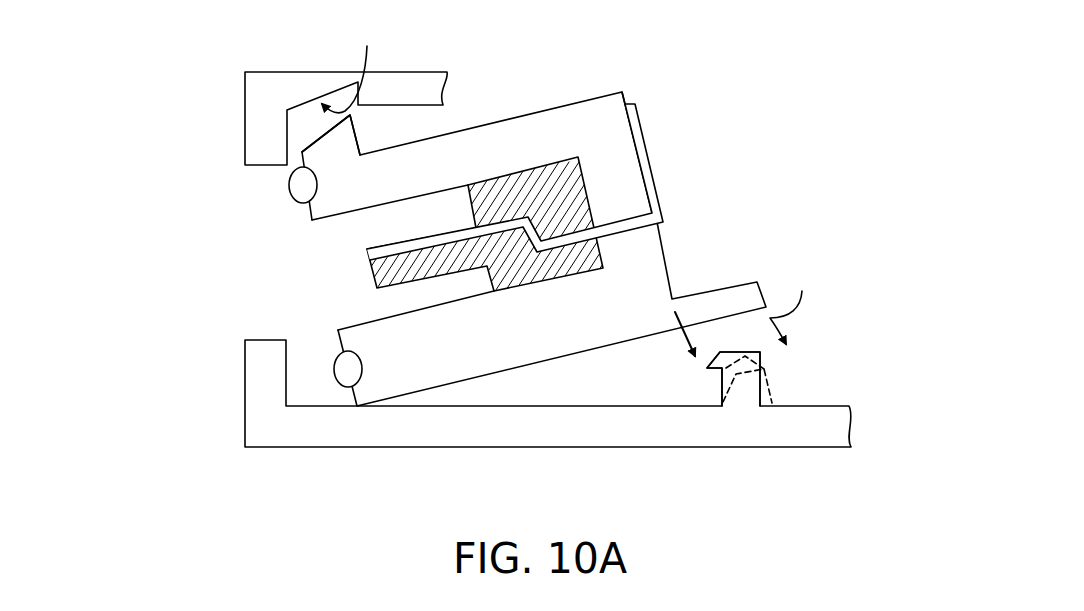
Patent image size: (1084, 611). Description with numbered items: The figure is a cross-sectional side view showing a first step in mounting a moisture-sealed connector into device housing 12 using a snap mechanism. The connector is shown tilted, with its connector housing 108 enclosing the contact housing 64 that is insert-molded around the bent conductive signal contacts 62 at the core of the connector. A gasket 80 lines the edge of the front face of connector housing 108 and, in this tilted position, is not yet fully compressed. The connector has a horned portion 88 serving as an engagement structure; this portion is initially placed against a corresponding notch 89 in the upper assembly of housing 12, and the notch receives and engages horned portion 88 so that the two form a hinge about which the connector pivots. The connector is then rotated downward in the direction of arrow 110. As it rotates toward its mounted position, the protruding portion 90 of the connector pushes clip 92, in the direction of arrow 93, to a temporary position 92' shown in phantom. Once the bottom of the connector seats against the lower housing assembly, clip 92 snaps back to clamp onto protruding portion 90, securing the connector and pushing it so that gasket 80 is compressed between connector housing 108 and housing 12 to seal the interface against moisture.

The device housing 12 is at (427, 84).
The conductive signal contacts 62 is at (640, 125).
The contact housing 64 is at (509, 290).
The gasket 80 is at (340, 362).
The horned portion 88 is at (316, 155).
The notch 89 is at (352, 66).
The protruding portion 90 is at (743, 291).
The clip 92 is at (733, 422).
The temporary position 92' is at (786, 376).
The arrow 93 is at (794, 303).
The connector housing 108 is at (604, 108).
The arrow 110 is at (682, 333).